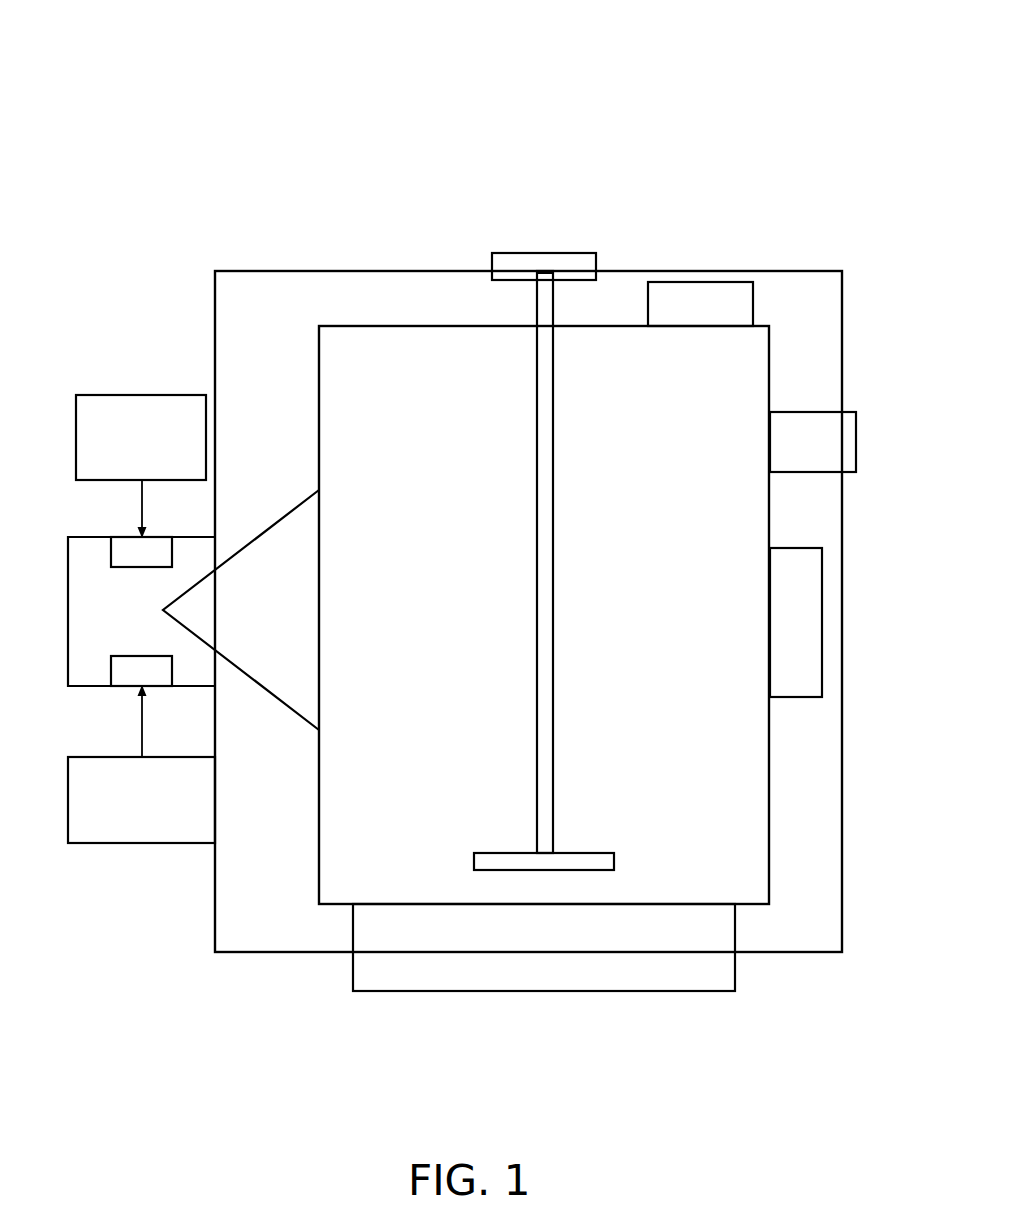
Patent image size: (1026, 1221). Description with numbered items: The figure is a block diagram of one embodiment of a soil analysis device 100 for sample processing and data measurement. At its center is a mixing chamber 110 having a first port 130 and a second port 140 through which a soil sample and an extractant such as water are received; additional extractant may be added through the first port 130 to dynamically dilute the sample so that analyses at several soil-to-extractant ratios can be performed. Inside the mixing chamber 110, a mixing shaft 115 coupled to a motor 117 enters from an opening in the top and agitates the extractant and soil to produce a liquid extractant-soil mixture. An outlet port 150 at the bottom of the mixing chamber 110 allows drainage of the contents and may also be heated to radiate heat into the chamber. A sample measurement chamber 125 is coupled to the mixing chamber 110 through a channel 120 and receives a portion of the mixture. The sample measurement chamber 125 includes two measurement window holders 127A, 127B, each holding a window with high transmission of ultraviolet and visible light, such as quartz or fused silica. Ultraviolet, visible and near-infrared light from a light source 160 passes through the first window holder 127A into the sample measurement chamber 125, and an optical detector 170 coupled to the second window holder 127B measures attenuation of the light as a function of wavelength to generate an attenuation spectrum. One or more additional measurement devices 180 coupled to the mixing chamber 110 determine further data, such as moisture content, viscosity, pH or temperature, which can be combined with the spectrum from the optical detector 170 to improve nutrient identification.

The soil analysis device 100 is at (122, 50).
The mixing chamber 110 is at (372, 363).
The mixing shaft 115 is at (537, 800).
The motor 117 is at (545, 252).
The channel 120 is at (285, 708).
The sample measurement chamber 125 is at (68, 613).
The first measurement window holder 127A is at (111, 550).
The second measurement window holder 127B is at (111, 671).
The first port 130 is at (700, 282).
The second port 140 is at (857, 442).
The outlet port 150 is at (545, 992).
The light source 160 is at (122, 476).
The optical detector 170 is at (122, 825).
The additional measurement device 180 is at (822, 622).